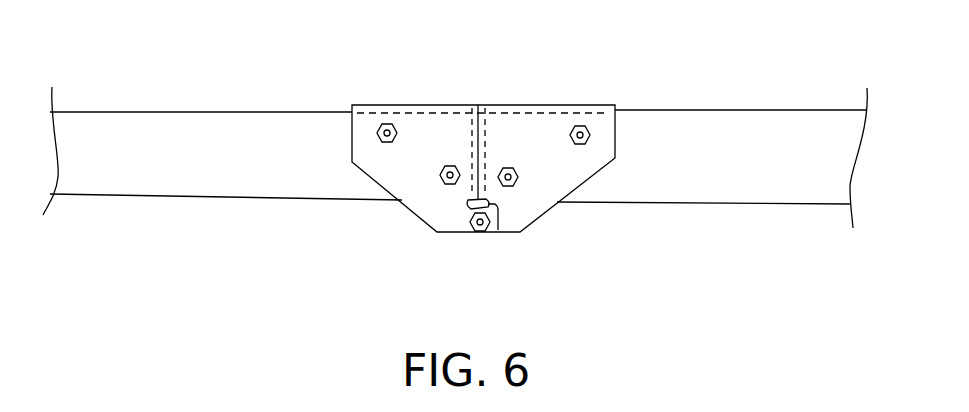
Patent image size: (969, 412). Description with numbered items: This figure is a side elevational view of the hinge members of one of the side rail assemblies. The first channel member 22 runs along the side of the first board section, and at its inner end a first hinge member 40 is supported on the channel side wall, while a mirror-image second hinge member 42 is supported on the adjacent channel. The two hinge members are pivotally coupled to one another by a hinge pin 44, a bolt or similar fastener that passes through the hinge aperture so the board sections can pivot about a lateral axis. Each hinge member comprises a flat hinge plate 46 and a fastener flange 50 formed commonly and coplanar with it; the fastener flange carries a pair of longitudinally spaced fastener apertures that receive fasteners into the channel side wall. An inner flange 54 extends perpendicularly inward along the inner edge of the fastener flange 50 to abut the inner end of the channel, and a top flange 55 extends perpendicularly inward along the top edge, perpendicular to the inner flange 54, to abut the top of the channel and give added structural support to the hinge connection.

The first channel member 22 is at (235, 128).
The first hinge member 40 is at (553, 155).
The second hinge member 42 is at (410, 190).
The hinge pin 44 is at (480, 233).
The hinge plate 46 is at (450, 222).
The fastener flange 50 is at (407, 113).
The inner flange 54 is at (462, 118).
The top flange 55 is at (580, 112).